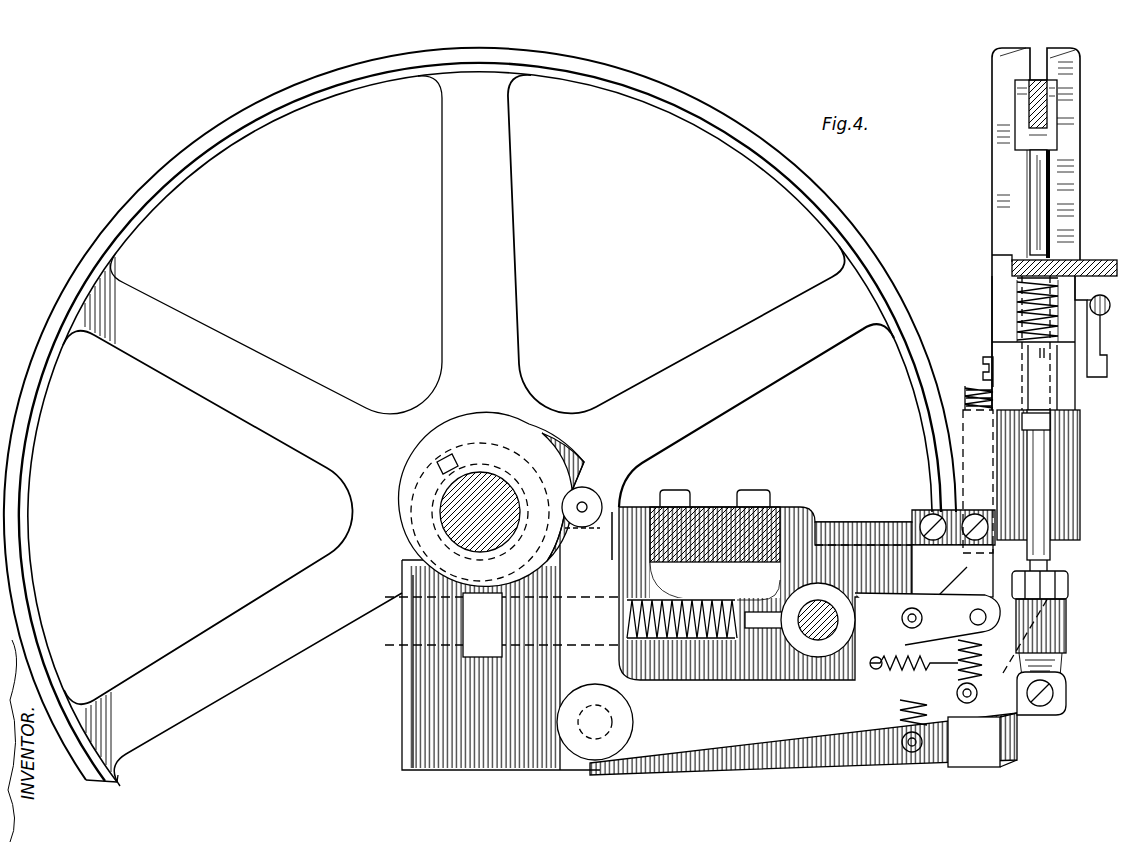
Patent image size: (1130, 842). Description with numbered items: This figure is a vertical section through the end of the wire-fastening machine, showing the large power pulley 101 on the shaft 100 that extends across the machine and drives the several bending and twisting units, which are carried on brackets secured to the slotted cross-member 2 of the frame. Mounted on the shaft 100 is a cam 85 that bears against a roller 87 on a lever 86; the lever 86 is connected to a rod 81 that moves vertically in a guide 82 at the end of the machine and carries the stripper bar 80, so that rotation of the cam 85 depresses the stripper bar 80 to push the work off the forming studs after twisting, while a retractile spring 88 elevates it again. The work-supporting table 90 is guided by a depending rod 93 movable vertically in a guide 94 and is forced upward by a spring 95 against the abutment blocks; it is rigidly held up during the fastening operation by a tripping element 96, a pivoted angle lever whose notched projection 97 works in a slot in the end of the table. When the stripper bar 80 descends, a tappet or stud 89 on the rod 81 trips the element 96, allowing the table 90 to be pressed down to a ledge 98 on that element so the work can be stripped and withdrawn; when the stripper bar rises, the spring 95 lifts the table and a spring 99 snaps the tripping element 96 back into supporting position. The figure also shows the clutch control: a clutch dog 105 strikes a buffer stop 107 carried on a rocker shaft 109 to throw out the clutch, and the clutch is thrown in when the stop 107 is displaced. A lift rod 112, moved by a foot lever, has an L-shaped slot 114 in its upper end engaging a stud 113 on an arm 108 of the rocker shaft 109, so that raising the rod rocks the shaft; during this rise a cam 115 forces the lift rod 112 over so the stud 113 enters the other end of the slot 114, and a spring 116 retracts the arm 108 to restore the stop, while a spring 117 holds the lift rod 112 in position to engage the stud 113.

The slotted cross-member 2 is at (702, 508).
The stripper bar 80 is at (1015, 86).
The rods 81 is at (1040, 177).
The guides 82 is at (1020, 58).
The cams 85 is at (490, 412).
The levers 86 is at (803, 578).
The rollers 87 is at (592, 488).
The retractile springs 88 is at (978, 386).
The tappets or studs 89 is at (1040, 246).
The work-supporting table 90 is at (1012, 268).
The depending rods 93 is at (1017, 284).
The guides 94 is at (1062, 418).
The springs 95 is at (1017, 304).
The tripping elements 96 is at (1068, 345).
The notched projections 97 is at (1085, 268).
The ledges 98 is at (1112, 262).
The springs 99 is at (1106, 318).
The shaft 100 is at (462, 490).
The power pulley 101 is at (806, 192).
The clutch dog 105 is at (402, 592).
The buffer stop 107 is at (575, 650).
The arm 108 is at (905, 533).
The rocker shaft 109 is at (838, 608).
The lift rod 112 is at (990, 742).
The stud 113 is at (978, 606).
The L-shaped slot 114 is at (1035, 648).
The cam 115 is at (925, 553).
The spring 116 is at (902, 636).
The spring 117 is at (885, 672).